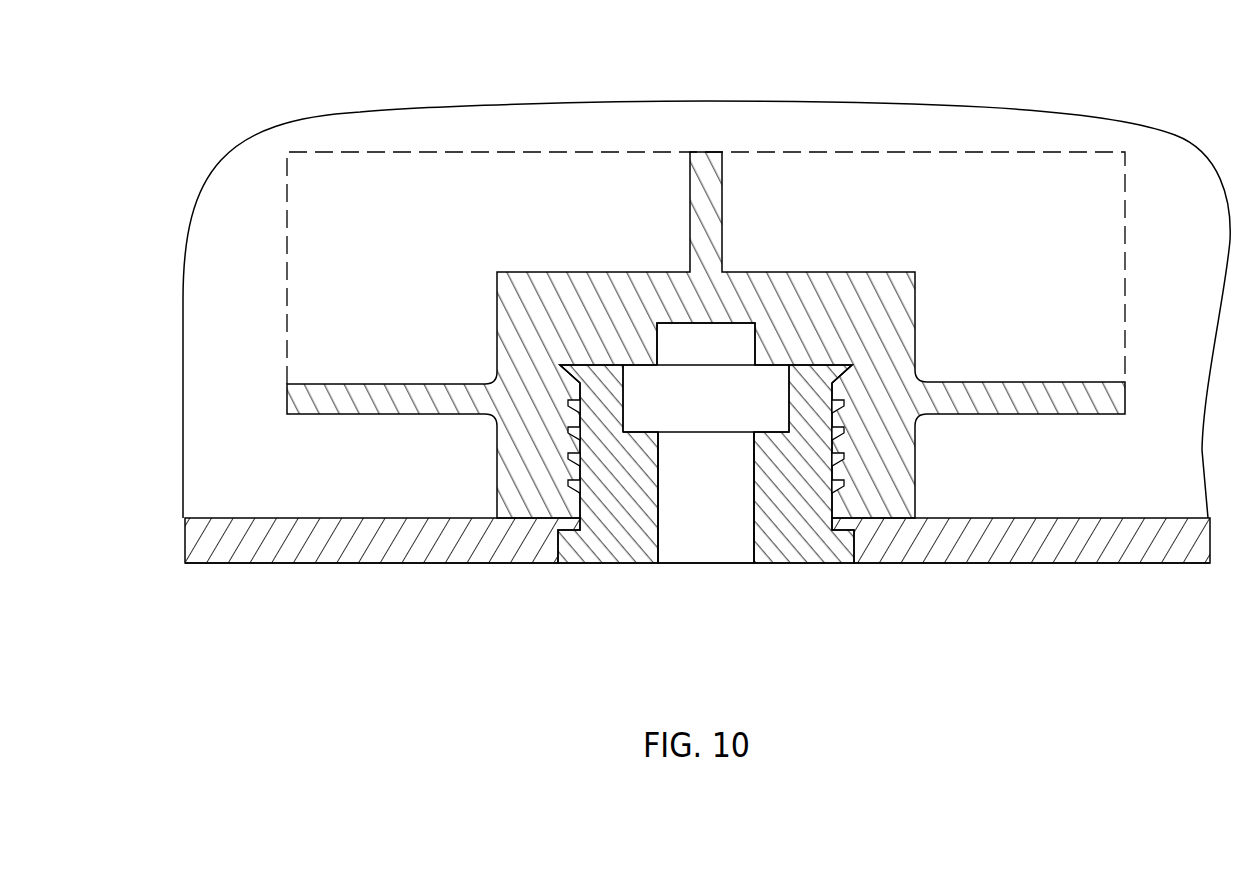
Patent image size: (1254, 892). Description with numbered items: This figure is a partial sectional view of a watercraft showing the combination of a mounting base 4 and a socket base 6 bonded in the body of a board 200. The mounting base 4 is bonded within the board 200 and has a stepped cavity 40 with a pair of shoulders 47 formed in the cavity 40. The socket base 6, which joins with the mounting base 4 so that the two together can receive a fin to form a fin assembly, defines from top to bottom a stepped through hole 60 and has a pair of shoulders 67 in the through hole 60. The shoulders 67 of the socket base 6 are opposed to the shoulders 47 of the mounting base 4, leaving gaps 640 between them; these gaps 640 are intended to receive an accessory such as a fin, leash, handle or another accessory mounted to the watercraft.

The board 200 is at (1162, 163).
The mounting base 4 is at (870, 295).
The stepped cavity 40 is at (728, 345).
The shoulders 47 is at (638, 362).
The socket base 6 is at (582, 546).
The stepped through hole 60 is at (703, 533).
The shoulders 67 is at (637, 432).
The gaps 640 is at (780, 422).